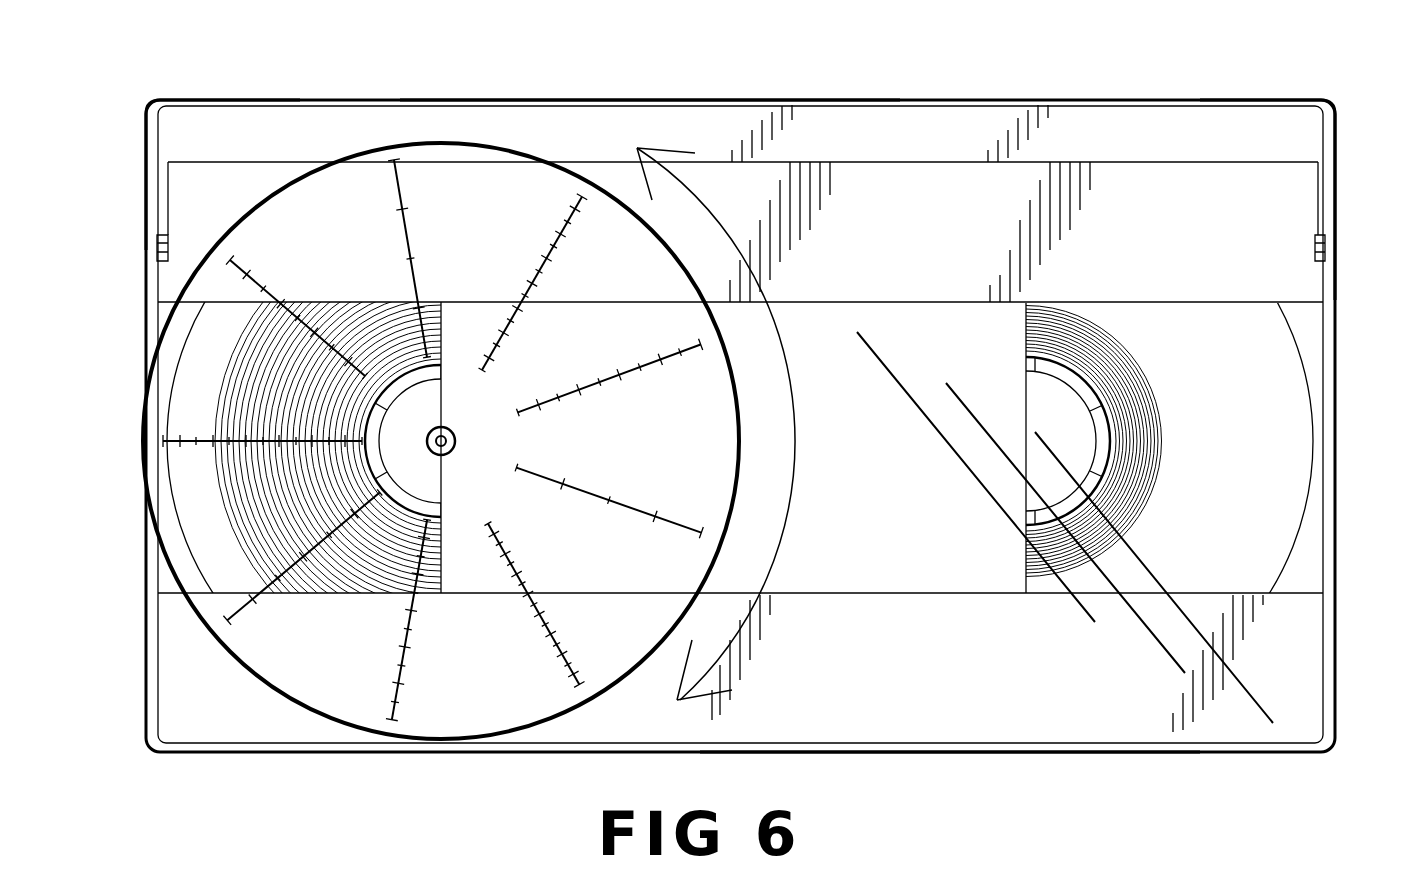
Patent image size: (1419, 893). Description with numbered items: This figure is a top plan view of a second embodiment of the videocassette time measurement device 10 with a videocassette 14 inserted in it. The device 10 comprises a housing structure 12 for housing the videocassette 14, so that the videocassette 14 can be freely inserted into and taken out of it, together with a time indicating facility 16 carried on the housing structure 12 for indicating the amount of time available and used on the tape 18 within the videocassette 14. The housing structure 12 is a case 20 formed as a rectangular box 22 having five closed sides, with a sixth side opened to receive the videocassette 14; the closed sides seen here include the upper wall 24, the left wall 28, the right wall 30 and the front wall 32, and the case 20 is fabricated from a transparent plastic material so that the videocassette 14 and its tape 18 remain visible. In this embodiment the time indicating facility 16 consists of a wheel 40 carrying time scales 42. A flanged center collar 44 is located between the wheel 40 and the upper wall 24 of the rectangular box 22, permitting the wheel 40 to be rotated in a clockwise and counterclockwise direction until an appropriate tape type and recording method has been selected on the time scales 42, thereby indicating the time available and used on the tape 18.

The videocassette time measurement device 10 is at (1135, 53).
The housing structure 12 is at (783, 100).
The videocassette 14 is at (960, 135).
The time indicating facility 16 is at (276, 188).
The tape 18 is at (1157, 408).
The case 20 is at (566, 100).
The rectangular box 22 is at (1270, 103).
The upper wall 24 is at (932, 735).
The left wall 28 is at (147, 140).
The right wall 30 is at (1337, 130).
The front wall 32 is at (1083, 755).
The wheel 40 is at (268, 655).
The time scales 42 is at (250, 262).
The flanged center collar 44 is at (455, 441).